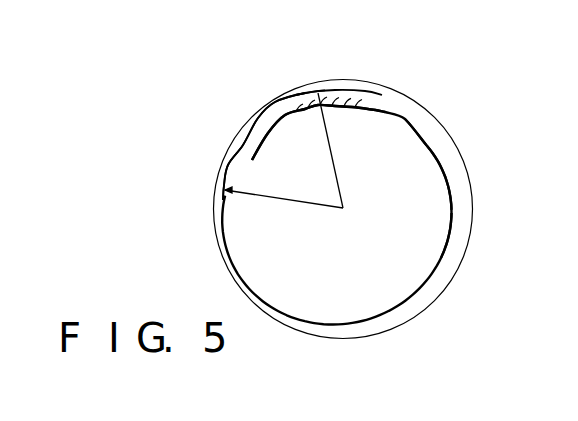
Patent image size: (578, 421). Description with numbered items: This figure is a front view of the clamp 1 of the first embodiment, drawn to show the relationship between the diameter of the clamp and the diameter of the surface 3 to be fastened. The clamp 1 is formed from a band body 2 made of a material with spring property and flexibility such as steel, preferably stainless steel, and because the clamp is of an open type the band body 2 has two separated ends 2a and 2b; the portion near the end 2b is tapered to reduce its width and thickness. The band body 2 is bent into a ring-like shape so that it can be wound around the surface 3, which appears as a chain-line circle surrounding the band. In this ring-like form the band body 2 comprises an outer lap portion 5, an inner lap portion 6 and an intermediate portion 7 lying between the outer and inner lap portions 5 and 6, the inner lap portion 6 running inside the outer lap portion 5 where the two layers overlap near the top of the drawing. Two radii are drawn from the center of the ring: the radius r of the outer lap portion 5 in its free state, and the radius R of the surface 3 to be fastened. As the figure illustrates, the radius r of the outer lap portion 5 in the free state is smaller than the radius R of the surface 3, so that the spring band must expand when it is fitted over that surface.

The clamp 1 is at (441, 145).
The band body 2 is at (419, 295).
The end of band body 2a is at (374, 90).
The end of band body 2b is at (244, 147).
The surface to be fastened 3 is at (475, 205).
The outer lap portion 5 is at (303, 92).
The inner lap portion 6 is at (277, 126).
The intermediate portion 7 is at (453, 240).
The radius of outer lap portion r is at (331, 150).
The radius of surface to be fastened R is at (284, 206).